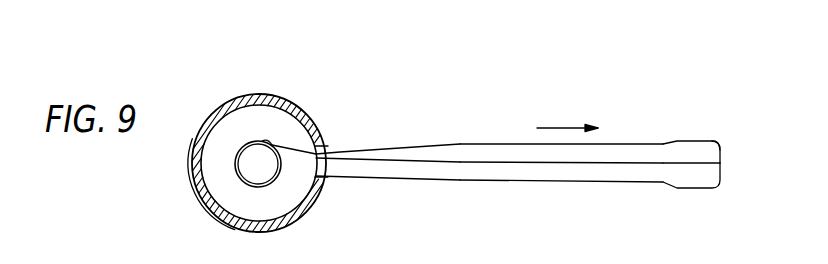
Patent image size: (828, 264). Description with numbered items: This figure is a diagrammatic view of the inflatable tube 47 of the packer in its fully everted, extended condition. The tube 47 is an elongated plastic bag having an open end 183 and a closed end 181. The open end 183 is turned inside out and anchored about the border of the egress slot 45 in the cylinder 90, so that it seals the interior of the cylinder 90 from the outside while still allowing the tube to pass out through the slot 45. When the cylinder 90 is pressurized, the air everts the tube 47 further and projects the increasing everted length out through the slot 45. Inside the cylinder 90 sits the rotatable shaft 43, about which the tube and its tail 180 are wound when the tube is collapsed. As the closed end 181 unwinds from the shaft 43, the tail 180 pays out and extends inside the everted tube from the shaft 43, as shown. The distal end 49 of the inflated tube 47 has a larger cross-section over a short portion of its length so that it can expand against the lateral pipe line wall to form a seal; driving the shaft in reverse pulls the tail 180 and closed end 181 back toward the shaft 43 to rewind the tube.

The cylinder 90 is at (293, 100).
The rotatable shaft 43 is at (237, 170).
The open end 183 is at (323, 143).
The slot 45 is at (330, 168).
The tail 180 is at (413, 166).
The inflatable tube 47 is at (547, 183).
The distal end 49 is at (694, 190).
The closed end 181 is at (722, 152).